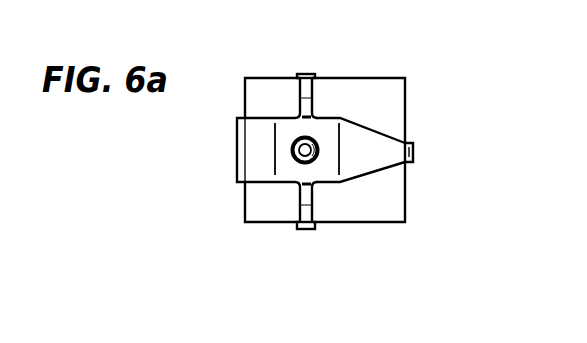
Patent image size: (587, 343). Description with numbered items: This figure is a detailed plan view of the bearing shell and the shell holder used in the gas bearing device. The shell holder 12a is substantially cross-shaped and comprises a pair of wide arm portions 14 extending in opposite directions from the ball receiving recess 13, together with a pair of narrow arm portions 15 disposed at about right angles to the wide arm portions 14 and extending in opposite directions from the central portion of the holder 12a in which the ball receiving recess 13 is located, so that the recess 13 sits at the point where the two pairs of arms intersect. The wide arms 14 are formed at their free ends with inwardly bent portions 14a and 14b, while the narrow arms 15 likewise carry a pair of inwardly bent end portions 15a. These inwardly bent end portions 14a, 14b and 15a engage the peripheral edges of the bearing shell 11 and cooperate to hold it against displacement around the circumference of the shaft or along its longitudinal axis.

The bearing shell 11 is at (397, 205).
The shell holder 12a is at (378, 132).
The ball receiving recess 13 is at (296, 155).
The wide arm portions 14 is at (237, 135).
The inwardly bent portion 14a is at (413, 150).
The inwardly bent portion 14b is at (241, 157).
The narrow arm portions 15 is at (308, 107).
The inwardly bent end portions 15a is at (305, 73).